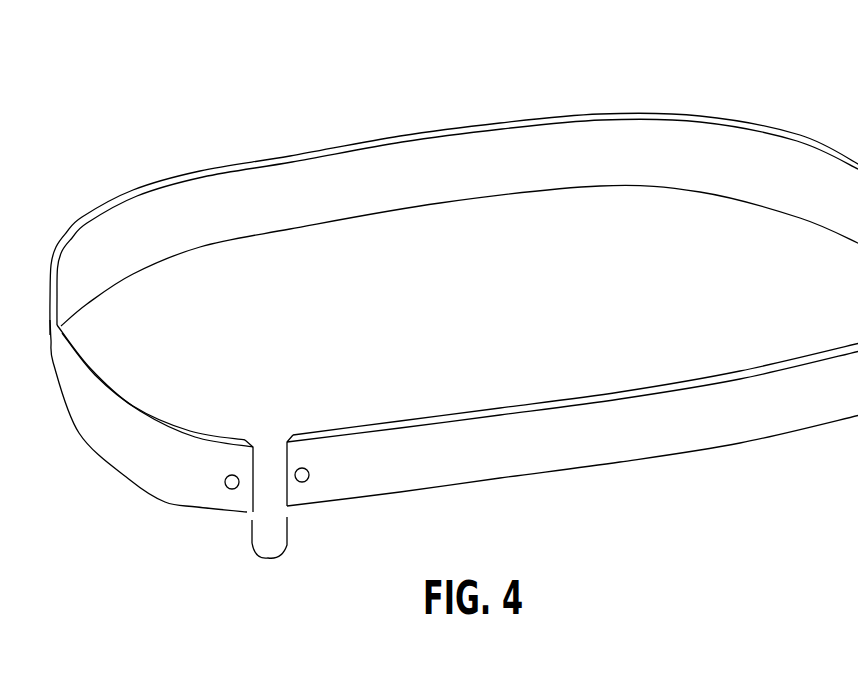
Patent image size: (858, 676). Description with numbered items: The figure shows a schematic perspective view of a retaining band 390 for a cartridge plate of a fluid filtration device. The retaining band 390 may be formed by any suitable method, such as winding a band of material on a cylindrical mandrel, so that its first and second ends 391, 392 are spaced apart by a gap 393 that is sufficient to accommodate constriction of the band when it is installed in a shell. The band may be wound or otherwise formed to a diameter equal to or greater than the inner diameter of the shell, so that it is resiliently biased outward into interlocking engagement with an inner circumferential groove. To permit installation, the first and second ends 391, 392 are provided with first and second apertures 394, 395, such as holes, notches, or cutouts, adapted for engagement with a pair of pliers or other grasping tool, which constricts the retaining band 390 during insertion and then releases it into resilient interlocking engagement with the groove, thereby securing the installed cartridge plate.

The retaining band 390 is at (455, 95).
The first end 391 is at (220, 500).
The second end 392 is at (307, 507).
The gap 393 is at (273, 558).
The first aperture 394 is at (232, 475).
The second aperture 395 is at (302, 468).